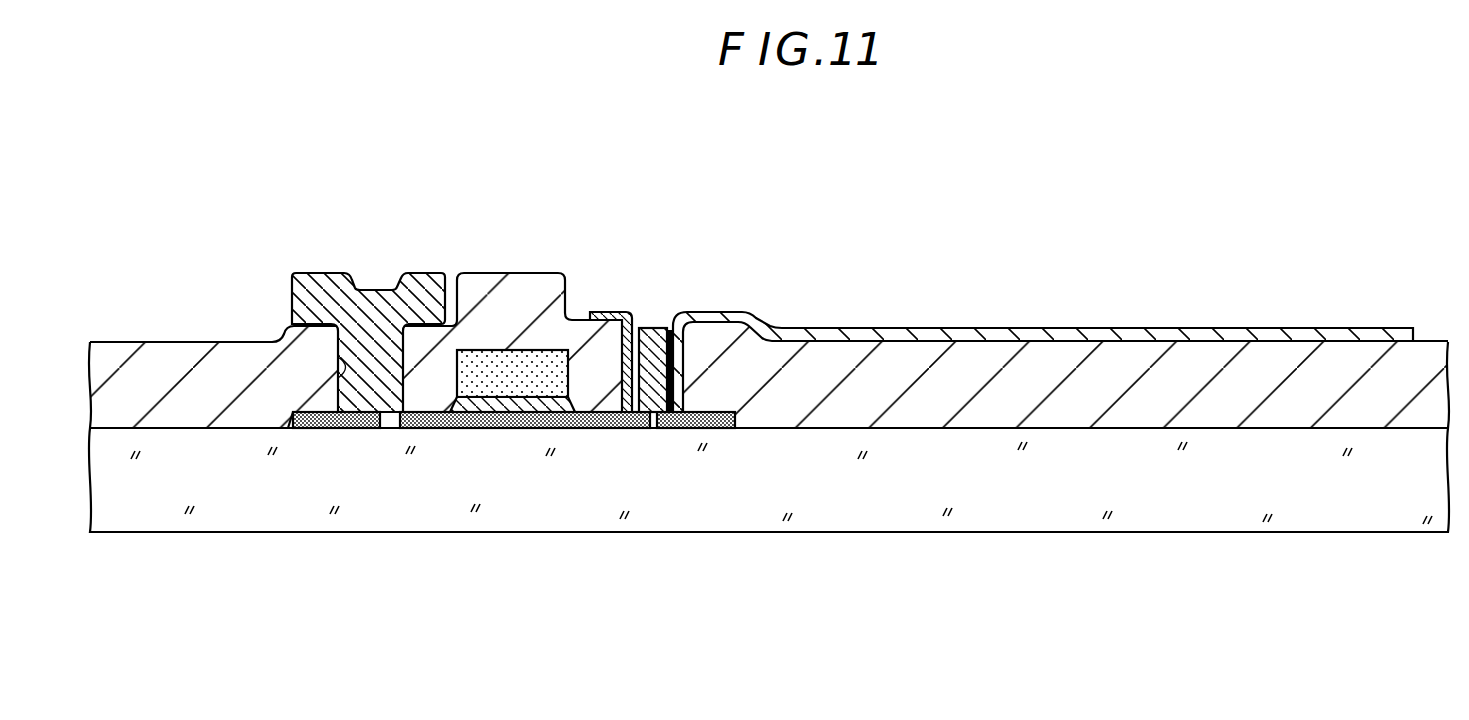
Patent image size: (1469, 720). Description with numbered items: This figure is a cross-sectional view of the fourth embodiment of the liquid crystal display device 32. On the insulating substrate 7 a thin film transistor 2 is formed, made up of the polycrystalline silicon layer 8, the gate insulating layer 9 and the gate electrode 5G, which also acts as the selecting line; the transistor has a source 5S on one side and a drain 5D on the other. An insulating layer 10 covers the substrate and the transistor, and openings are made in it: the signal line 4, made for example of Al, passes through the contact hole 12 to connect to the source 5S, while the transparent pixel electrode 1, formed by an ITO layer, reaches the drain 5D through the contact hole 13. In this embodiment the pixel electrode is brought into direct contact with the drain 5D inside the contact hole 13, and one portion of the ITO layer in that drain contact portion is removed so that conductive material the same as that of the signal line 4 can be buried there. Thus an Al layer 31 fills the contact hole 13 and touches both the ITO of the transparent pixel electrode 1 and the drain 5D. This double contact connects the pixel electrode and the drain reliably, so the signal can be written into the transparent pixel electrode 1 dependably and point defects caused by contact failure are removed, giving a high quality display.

The transparent pixel electrode 1 is at (1065, 332).
The thin film transistor 2 is at (327, 619).
The signal line 4 is at (322, 275).
The source 5S is at (348, 425).
The drain 5D is at (672, 428).
The gate electrode 5G is at (542, 428).
The insulating substrate 7 is at (1030, 520).
The polycrystalline silicon layer 8 is at (510, 428).
The gate insulating layer 9 is at (470, 428).
The insulating layer 10 is at (1298, 417).
The contact hole 12 is at (320, 420).
The contact hole 13 is at (683, 363).
The Al layer 31 is at (655, 337).
The liquid crystal display device 32 is at (672, 168).